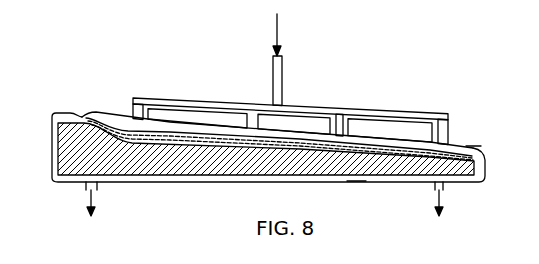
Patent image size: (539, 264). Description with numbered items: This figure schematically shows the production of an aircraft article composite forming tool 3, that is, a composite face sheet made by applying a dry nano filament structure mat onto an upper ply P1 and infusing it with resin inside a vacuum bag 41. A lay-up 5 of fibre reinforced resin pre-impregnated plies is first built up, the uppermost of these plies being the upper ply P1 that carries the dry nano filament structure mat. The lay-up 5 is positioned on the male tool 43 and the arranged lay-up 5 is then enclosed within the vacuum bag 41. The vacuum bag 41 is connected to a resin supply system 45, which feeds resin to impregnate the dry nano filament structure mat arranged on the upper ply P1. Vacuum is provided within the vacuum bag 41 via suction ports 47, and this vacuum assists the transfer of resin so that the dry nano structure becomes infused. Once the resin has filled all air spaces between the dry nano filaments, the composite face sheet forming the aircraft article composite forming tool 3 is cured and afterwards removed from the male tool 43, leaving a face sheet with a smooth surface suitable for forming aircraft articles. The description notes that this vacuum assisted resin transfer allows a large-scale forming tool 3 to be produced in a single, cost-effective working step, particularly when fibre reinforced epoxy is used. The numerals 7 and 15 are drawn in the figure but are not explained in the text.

The aircraft article composite forming tool 3 is at (492, 163).
The lay-up 5 is at (89, 106).
The fiber layer stack 7 is at (188, 134).
The mold body 15 is at (128, 155).
The vacuum bag 41 is at (481, 144).
The male tool 43 is at (349, 182).
The resin supply system 45 is at (293, 105).
The suction ports 47 is at (85, 188).
The upper ply P1 is at (76, 108).